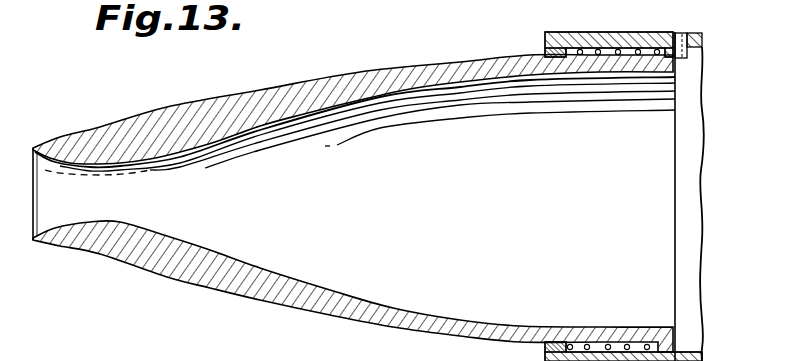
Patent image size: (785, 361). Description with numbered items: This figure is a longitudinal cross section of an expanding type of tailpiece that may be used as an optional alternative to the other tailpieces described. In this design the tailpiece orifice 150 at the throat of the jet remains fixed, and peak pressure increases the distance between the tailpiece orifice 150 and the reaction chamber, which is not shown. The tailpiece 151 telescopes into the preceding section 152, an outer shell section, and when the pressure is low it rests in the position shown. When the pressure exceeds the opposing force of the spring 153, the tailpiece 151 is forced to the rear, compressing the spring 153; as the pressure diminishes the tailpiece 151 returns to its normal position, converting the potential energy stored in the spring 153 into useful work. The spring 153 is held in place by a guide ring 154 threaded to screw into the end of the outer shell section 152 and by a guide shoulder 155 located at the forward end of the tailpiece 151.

The tailpiece orifice 150 is at (123, 203).
The tailpiece 151 is at (353, 72).
The preceding section 152 is at (613, 32).
The spring 153 is at (605, 52).
The guide ring 154 is at (546, 44).
The guide shoulder 155 is at (677, 33).